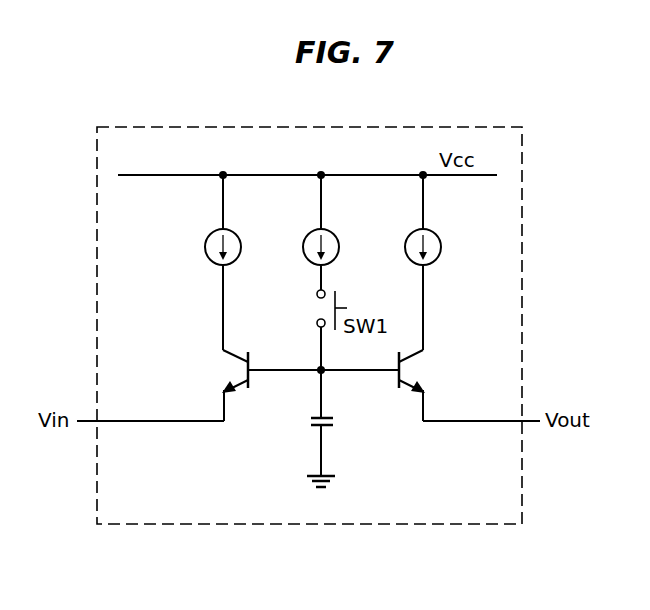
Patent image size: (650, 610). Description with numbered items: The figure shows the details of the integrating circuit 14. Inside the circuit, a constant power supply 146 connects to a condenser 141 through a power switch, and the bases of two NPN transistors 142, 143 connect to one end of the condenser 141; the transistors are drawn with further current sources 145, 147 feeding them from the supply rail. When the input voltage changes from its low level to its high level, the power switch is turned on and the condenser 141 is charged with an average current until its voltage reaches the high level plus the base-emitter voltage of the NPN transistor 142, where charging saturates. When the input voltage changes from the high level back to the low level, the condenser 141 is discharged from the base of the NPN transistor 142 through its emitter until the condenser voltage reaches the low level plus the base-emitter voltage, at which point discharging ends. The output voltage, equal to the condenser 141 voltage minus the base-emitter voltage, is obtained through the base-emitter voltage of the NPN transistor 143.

The integrating circuit 14 is at (385, 127).
The condenser 141 is at (325, 409).
The NPN transistor 142 is at (231, 350).
The NPN transistor 143 is at (410, 368).
The current source 145 is at (227, 227).
The constant power supply 146 is at (325, 227).
The current source 147 is at (427, 227).